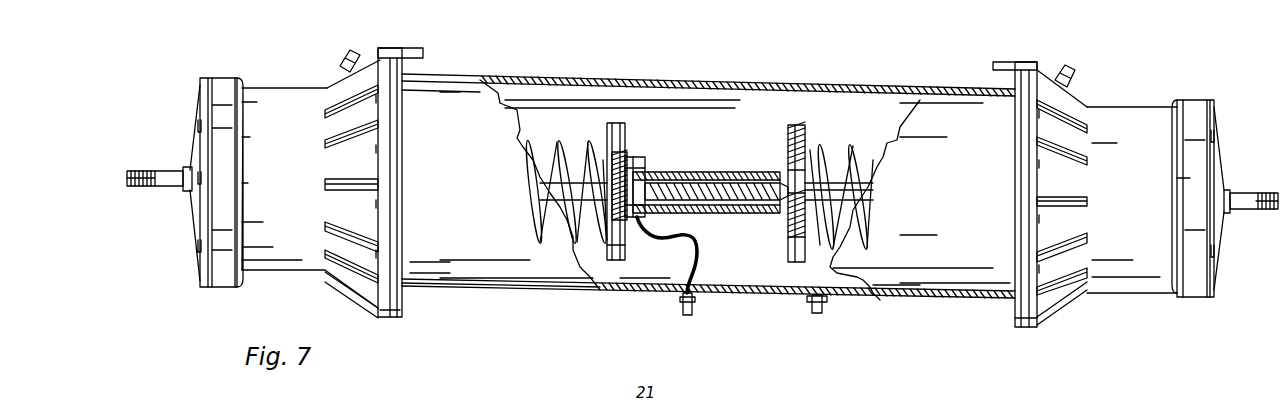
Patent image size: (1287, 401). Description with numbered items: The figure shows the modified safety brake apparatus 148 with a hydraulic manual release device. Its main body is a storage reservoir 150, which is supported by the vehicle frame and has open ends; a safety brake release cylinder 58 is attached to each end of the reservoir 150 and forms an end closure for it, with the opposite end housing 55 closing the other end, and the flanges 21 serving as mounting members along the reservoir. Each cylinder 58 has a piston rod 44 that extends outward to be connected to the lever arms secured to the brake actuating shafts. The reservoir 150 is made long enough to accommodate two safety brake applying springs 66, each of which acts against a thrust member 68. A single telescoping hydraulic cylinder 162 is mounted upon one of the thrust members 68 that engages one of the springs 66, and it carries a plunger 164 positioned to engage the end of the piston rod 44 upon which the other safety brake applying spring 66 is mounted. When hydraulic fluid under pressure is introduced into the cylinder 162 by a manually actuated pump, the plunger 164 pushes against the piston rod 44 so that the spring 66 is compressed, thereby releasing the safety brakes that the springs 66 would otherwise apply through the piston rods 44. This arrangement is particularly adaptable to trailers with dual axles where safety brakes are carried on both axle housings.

The mounting flange 21 is at (420, 52).
The piston rod 44 is at (173, 177).
The end housing 55 is at (1126, 112).
The safety brake release cylinder 58 is at (282, 100).
The safety brake applying spring 66 is at (557, 145).
The thrust member 68 is at (620, 140).
The safety brake apparatus 148 is at (780, 298).
The storage reservoir 150 is at (623, 298).
The telescoping hydraulic cylinder 162 is at (712, 172).
The plunger 164 is at (753, 201).